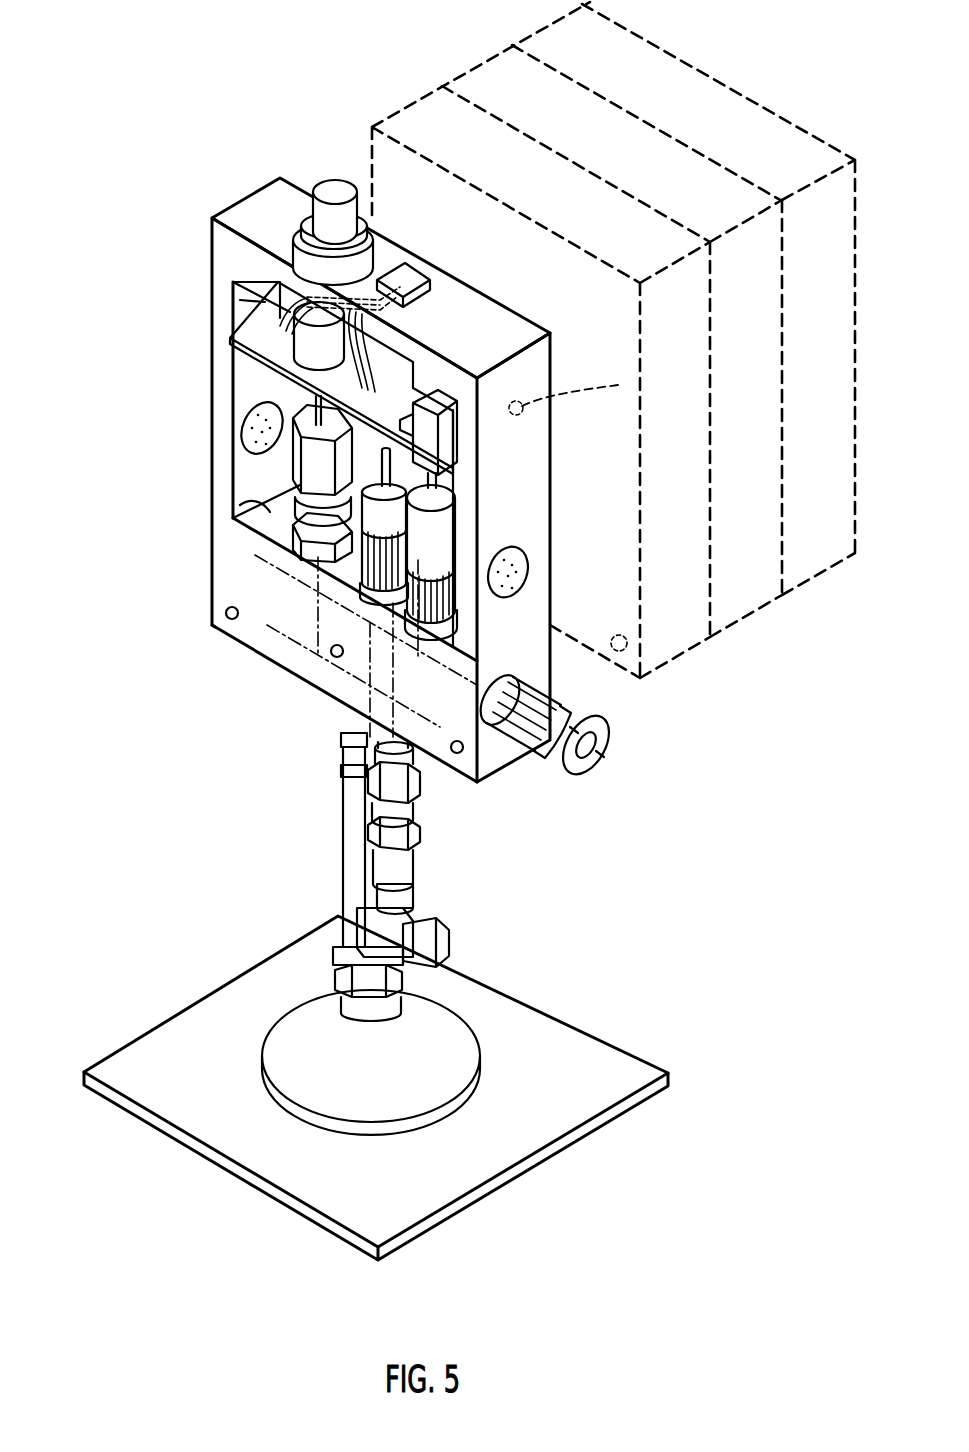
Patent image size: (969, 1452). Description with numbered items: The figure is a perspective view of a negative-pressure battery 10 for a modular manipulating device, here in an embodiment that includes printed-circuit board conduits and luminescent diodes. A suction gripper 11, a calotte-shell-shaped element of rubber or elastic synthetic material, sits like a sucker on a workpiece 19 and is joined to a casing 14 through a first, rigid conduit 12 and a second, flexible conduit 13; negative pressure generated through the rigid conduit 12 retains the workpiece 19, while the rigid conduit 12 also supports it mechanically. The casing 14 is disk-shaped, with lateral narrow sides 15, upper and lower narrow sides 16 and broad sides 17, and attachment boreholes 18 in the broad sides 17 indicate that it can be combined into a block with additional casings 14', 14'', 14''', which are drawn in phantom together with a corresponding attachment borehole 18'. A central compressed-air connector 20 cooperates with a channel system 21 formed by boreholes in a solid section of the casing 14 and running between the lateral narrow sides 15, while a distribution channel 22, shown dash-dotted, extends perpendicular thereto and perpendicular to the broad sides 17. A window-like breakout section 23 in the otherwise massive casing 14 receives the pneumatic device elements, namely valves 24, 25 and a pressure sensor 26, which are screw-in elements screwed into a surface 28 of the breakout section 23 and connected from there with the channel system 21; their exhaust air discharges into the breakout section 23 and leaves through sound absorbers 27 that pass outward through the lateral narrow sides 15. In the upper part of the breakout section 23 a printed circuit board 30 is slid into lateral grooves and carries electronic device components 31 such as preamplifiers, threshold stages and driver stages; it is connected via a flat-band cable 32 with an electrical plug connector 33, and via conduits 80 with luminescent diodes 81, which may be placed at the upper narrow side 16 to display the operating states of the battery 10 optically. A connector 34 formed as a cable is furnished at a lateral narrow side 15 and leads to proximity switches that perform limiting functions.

The negative-pressure battery 10 is at (207, 185).
The suction gripper 11 is at (272, 1100).
The first, rigid conduit 12 is at (343, 863).
The second, flexible conduit 13 is at (433, 820).
The casing 14 is at (141, 685).
The additional casing 14' is at (541, 375).
The additional casing 14'' is at (612, 395).
The additional casing 14''' is at (683, 331).
The lateral narrow sides 15 is at (543, 600).
The upper and lower narrow sides 16 is at (248, 210).
The broad sides 17 is at (222, 507).
The attachment boreholes 18 is at (337, 734).
The attachment borehole 18' is at (647, 748).
The workpiece 19 is at (250, 1170).
The central compressed-air connector 20 is at (584, 678).
The channel system 21 is at (460, 680).
The distribution channel 22 is at (337, 657).
The window-like breakout section 23 is at (285, 398).
The valve 24 is at (452, 522).
The valve 25 is at (300, 453).
The pressure sensor 26 is at (290, 399).
The sound absorbers 27 is at (247, 453).
The surface 28 is at (240, 496).
The printed circuit board 30 is at (233, 337).
The electronic device components 31 is at (300, 290).
The flat-band cable 32 is at (392, 355).
The electrical plug connector 33 is at (340, 180).
The connector 34 is at (566, 390).
The conduits 80 is at (258, 296).
The luminescent diodes 81 is at (415, 272).